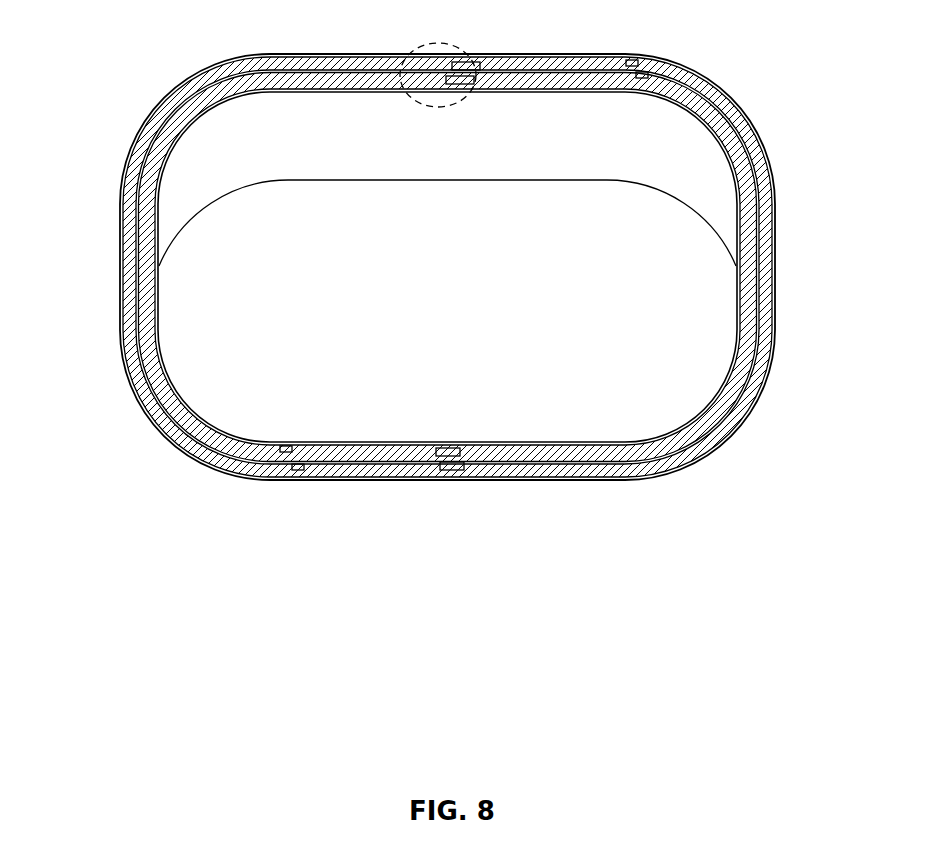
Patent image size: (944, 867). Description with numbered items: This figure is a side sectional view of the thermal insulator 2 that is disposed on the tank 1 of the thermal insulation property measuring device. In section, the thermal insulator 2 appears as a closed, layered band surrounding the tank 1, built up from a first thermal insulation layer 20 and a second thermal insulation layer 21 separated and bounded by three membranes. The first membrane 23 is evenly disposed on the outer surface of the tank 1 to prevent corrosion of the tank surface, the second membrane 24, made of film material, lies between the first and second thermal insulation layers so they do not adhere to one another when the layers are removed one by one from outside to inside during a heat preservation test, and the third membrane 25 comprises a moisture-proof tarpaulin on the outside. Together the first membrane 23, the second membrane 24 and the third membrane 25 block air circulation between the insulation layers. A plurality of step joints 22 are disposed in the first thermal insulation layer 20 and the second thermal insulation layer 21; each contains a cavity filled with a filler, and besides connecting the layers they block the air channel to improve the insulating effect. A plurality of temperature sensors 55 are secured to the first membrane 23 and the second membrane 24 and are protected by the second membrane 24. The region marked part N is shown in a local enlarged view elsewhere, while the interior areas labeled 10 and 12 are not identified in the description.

The tank 1 is at (213, 389).
The thermal insulator 2 is at (130, 82).
The housing interior 10 is at (683, 153).
The display panel 12 is at (647, 373).
The first thermal insulation layer 20 is at (573, 80).
The second thermal insulation layer 21 is at (685, 88).
The step joints 22 is at (640, 73).
The first membrane 23 is at (210, 90).
The second membrane 24 is at (343, 72).
The third membrane 25 is at (310, 58).
The temperature sensors 55 is at (470, 83).
The part N is at (458, 50).